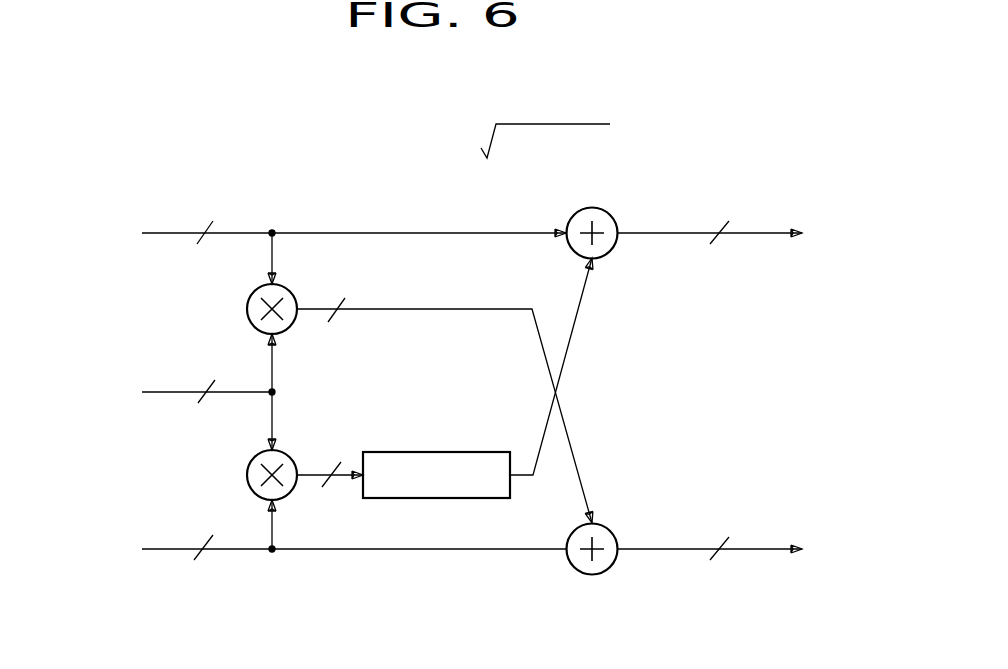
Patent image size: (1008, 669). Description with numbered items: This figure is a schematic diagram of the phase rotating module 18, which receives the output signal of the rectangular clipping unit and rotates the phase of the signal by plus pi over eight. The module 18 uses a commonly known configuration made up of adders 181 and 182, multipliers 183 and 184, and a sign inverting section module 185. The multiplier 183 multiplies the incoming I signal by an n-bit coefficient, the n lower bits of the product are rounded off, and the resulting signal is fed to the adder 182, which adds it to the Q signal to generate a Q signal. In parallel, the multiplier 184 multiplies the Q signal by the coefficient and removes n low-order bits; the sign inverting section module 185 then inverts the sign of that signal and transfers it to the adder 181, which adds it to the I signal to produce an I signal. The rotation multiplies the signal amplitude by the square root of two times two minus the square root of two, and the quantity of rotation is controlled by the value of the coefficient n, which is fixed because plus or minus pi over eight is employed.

The phase rotating module 18 is at (831, 170).
The adder 181 is at (615, 245).
The adder 182 is at (615, 560).
The multiplier 183 is at (247, 309).
The multiplier 184 is at (247, 475).
The sign inverting section module 185 is at (437, 452).